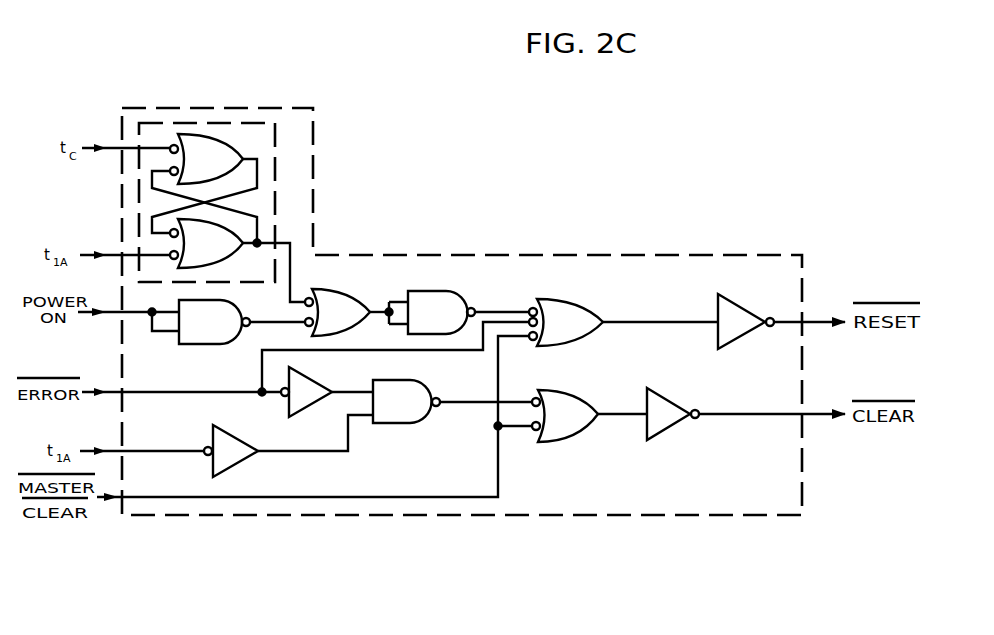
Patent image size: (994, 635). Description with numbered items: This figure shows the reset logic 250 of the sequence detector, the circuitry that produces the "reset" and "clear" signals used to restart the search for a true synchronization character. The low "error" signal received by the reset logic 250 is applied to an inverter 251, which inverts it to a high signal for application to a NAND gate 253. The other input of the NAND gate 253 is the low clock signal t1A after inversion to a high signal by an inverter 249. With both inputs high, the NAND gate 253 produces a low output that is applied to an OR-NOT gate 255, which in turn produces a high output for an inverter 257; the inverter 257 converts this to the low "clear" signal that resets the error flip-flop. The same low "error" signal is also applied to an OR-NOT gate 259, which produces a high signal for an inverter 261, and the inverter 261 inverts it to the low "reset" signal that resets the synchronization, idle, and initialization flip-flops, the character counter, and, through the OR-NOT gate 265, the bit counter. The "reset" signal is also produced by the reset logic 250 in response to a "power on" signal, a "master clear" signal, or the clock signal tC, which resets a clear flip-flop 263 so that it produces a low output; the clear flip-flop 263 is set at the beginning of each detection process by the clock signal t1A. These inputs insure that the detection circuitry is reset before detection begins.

The reset logic 250 is at (502, 255).
The clear flip-flop 263 is at (202, 122).
The OR-NOT gate 265 is at (336, 289).
The OR-NOT gate 259 is at (583, 299).
The inverter 261 is at (734, 303).
The inverter 251 is at (311, 379).
The NAND gate 253 is at (417, 380).
The OR-NOT gate 255 is at (573, 390).
The inverter 257 is at (668, 425).
The inverter 249 is at (245, 457).